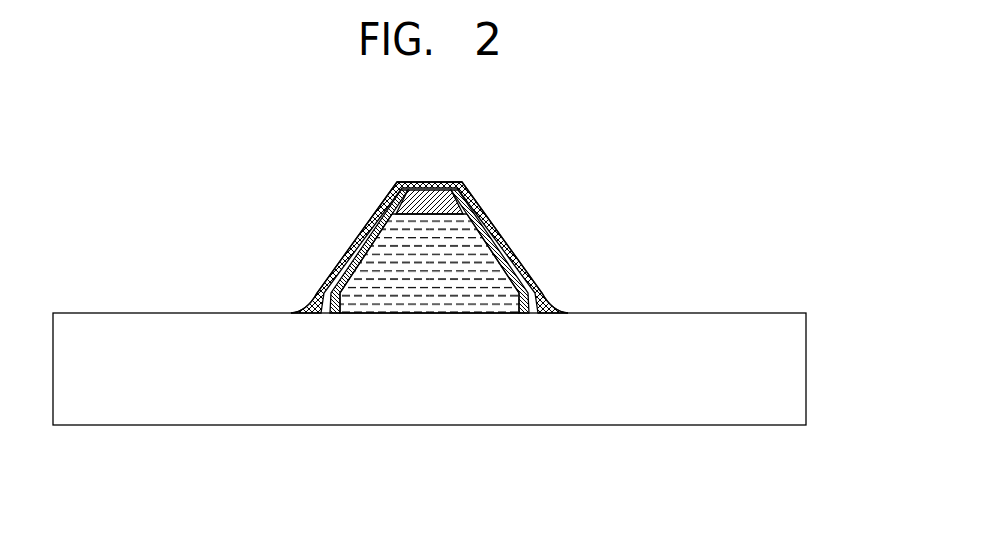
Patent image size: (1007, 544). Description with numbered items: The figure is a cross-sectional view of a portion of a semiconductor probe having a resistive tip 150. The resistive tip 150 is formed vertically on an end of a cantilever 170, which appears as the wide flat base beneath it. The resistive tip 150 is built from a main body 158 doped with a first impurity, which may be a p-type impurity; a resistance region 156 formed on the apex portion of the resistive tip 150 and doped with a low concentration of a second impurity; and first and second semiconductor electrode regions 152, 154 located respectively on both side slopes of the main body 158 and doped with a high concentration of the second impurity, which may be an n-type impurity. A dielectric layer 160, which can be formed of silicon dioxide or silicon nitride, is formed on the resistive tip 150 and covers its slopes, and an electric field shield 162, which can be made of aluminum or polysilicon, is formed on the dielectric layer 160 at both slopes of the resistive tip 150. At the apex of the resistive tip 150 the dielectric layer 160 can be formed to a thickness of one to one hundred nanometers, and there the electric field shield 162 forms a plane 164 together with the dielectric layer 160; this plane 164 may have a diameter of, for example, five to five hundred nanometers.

The resistive tip 150 is at (299, 241).
The first semiconductor electrode region 152 is at (360, 289).
The second semiconductor electrode region 154 is at (503, 290).
The resistance region 156 is at (401, 208).
The main body 158 is at (428, 297).
The dielectric layer 160 is at (525, 271).
The electric field shield 162 is at (489, 224).
The plane 164 is at (422, 177).
The cantilever 170 is at (662, 321).